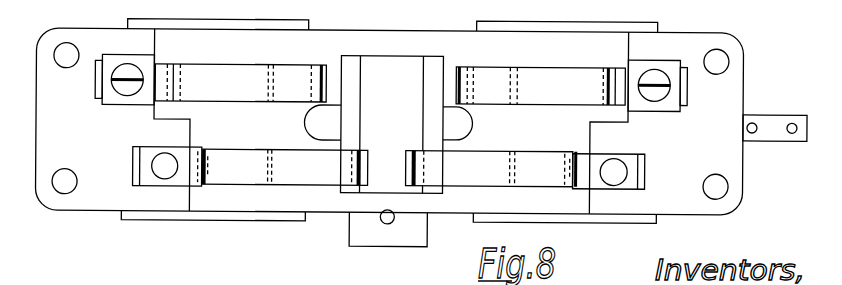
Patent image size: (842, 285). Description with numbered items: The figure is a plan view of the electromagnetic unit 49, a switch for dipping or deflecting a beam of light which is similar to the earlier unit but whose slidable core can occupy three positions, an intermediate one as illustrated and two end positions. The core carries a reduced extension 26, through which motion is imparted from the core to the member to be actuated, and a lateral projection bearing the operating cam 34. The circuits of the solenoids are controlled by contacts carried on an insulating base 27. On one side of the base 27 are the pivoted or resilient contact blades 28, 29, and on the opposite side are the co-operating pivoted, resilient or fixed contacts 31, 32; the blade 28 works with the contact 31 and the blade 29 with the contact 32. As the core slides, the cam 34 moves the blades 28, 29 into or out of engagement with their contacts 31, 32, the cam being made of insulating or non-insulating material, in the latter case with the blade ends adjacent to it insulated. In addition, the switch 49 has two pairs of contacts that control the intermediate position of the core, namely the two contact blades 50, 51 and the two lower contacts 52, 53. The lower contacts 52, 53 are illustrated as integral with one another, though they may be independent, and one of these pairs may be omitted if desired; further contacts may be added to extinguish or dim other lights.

The reduced extension 26 is at (779, 115).
The insulating base 27 is at (741, 49).
The contact blade 28 is at (537, 66).
The contact blade 29 is at (284, 64).
The contact 31 is at (510, 85).
The contact 32 is at (240, 69).
The operating cam 34 is at (388, 124).
The unit 49 is at (752, 201).
The contact blade 50 is at (497, 153).
The contact blade 51 is at (295, 150).
The lower contact 52 is at (512, 170).
The lower contact 53 is at (270, 168).